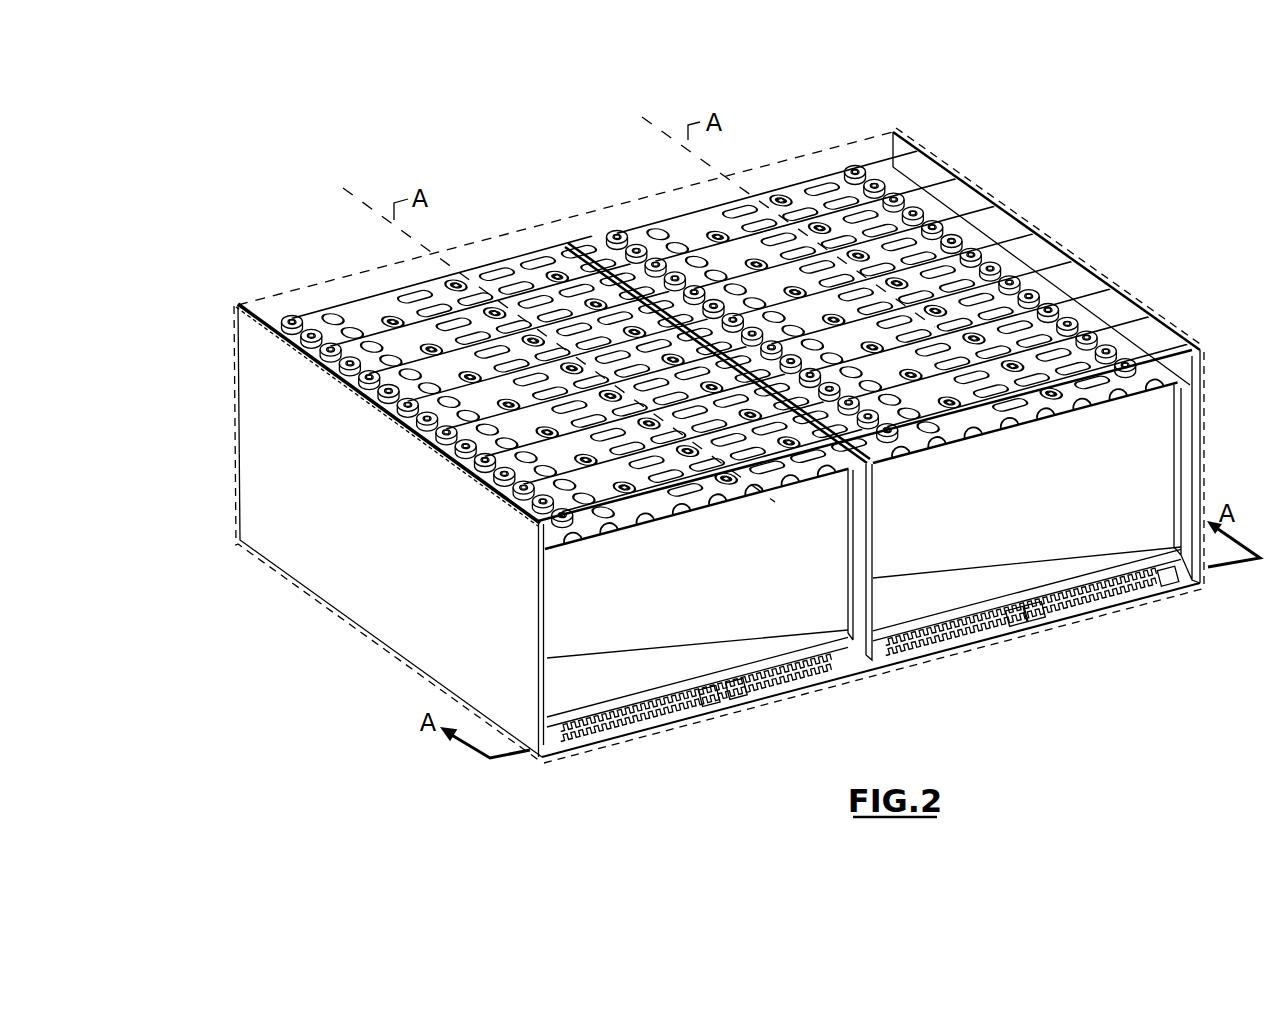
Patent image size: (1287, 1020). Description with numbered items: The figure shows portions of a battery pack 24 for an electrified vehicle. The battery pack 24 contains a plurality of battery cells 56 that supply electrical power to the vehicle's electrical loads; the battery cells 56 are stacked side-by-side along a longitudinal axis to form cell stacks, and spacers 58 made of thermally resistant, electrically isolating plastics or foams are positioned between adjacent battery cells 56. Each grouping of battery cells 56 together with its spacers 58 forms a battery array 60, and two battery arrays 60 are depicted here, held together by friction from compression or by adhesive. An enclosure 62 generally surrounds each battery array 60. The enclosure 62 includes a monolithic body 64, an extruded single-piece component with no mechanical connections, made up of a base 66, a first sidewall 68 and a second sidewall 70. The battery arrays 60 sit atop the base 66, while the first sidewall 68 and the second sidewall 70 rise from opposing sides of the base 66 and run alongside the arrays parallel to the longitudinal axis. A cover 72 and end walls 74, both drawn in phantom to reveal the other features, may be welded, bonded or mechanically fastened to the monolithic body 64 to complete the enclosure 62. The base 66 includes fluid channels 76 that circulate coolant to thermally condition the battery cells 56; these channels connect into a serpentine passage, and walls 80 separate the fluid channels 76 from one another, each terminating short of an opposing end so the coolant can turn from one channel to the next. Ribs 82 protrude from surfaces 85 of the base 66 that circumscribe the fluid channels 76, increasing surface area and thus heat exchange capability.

The battery pack 24 is at (940, 107).
The battery cells 56 is at (530, 315).
The spacers 58 is at (388, 345).
The battery array 60 is at (333, 340).
The enclosure 62 is at (228, 388).
The monolithic body 64 is at (255, 568).
The base 66 is at (563, 745).
The first sidewall 68 is at (375, 620).
The second sidewall 70 is at (1120, 300).
The cover 72 is at (640, 212).
The end walls 74 is at (618, 740).
The fluid channels 76 is at (662, 722).
The walls 80 is at (720, 700).
The ribs 82 is at (815, 685).
The surfaces 85 is at (985, 637).